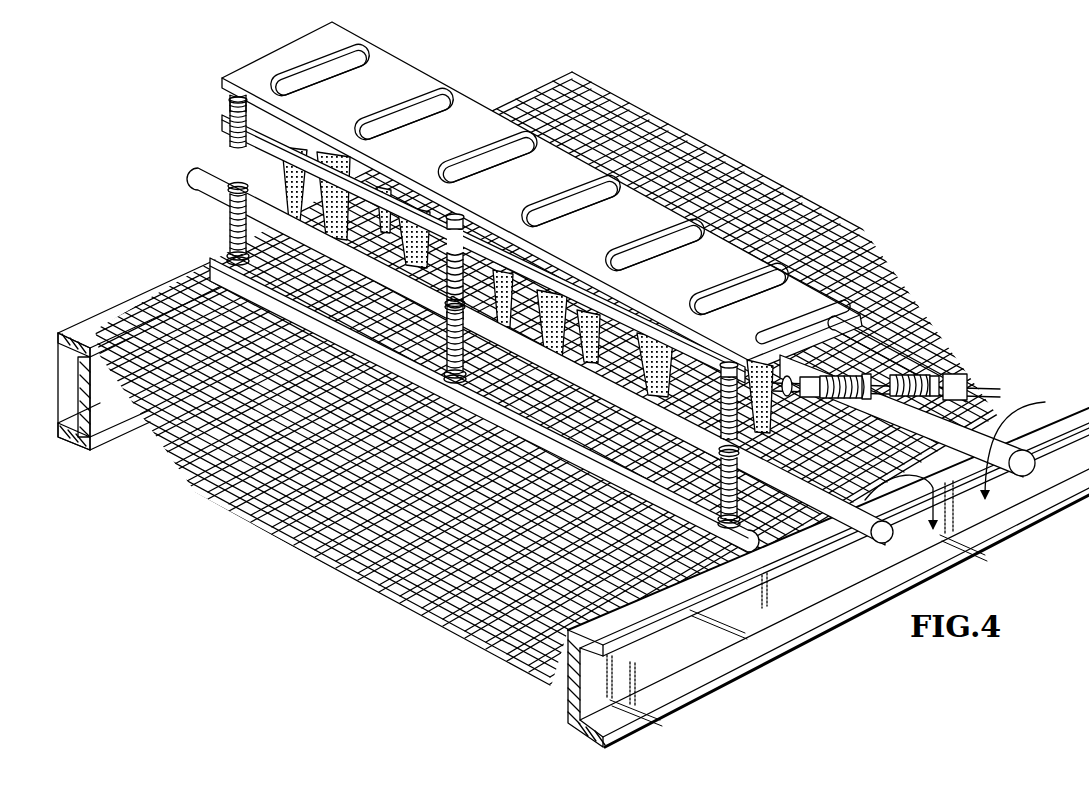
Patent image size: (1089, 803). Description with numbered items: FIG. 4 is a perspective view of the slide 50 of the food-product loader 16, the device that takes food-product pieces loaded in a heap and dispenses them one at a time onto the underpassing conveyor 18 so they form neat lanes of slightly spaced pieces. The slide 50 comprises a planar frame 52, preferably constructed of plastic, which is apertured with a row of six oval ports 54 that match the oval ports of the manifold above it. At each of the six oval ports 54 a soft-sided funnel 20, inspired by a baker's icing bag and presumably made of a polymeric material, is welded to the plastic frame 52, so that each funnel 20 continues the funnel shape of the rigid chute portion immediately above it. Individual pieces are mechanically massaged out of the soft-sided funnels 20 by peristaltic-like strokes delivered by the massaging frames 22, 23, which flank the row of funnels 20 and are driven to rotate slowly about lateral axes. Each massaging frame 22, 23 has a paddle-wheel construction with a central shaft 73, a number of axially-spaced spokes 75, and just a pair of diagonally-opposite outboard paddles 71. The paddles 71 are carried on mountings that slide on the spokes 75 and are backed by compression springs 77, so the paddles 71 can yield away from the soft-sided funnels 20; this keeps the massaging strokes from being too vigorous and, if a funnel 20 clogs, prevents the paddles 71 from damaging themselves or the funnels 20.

The food-product loader 16 is at (544, 375).
The conveyor 18 is at (783, 158).
The soft-sided funnel 20 is at (562, 208).
The massaging frame 22 is at (818, 538).
The massaging frame 23 is at (1036, 463).
The slide 50 is at (512, 227).
The planar frame 52 is at (542, 227).
The oval port 54 is at (560, 193).
The paddle 71 is at (222, 116).
The central shaft 73 is at (203, 167).
The spoke 75 is at (225, 223).
The compression spring 77 is at (222, 257).